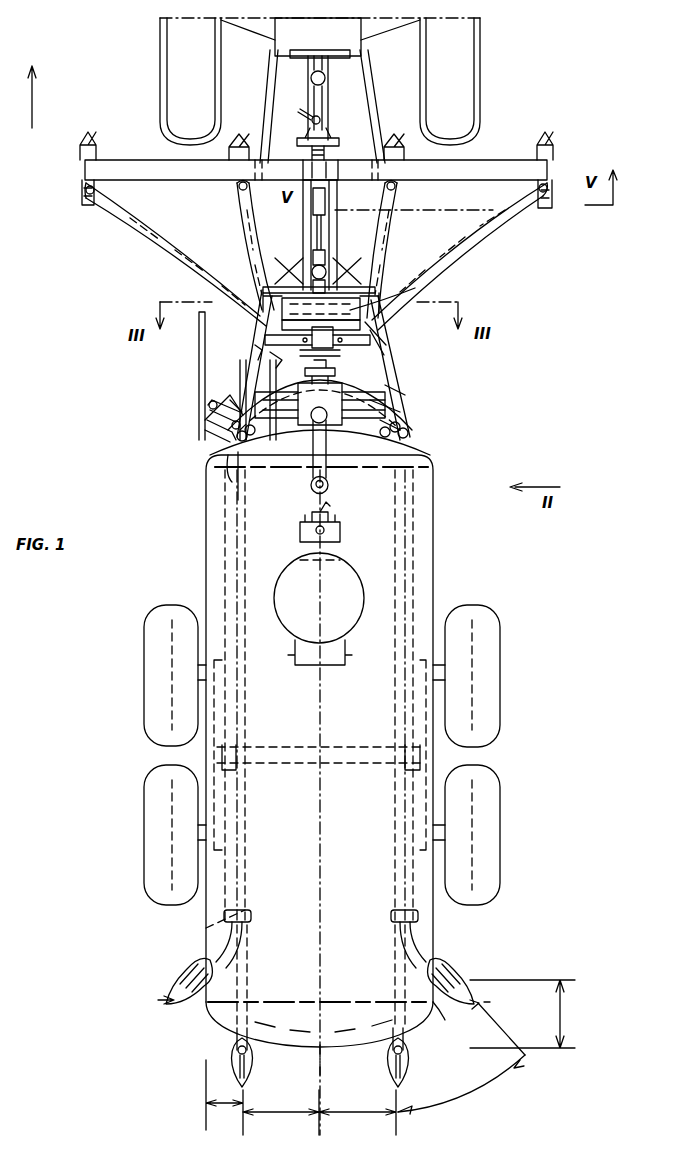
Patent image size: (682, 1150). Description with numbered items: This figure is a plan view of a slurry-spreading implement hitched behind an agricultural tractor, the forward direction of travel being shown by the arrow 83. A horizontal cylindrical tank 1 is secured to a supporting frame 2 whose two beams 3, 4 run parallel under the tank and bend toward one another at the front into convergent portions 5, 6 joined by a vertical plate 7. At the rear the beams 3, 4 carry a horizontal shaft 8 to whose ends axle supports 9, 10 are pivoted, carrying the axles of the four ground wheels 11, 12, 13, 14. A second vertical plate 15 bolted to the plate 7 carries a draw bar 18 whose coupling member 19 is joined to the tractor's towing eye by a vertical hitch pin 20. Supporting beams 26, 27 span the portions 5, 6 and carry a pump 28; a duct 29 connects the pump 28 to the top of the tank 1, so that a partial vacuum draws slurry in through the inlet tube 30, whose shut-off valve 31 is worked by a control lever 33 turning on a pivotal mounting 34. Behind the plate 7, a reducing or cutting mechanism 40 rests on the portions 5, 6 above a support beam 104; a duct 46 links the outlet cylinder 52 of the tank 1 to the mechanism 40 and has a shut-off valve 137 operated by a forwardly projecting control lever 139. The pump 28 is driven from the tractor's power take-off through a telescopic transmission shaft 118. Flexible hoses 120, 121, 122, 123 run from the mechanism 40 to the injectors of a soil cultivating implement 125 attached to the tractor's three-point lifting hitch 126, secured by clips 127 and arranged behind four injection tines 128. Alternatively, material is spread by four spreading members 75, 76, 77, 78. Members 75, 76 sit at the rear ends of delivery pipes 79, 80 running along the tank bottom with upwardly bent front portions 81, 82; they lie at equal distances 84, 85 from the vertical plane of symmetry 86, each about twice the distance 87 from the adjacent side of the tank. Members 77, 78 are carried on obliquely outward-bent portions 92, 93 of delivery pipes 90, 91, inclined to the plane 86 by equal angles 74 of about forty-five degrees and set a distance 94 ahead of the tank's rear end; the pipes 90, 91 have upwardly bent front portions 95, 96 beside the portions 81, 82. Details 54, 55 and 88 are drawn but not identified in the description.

The cylindrical tank 1 is at (206, 545).
The supporting frame 2 is at (427, 437).
The beam 3 is at (224, 510).
The beam 4 is at (434, 494).
The forwardly convergent portion 5 is at (252, 348).
The forwardly convergent portion 6 is at (400, 400).
The vertical plate 7 is at (405, 300).
The shaft 8 is at (310, 760).
The axle support 9 is at (206, 752).
The axle support 10 is at (434, 757).
The ground wheel 11 is at (146, 825).
The ground wheel 12 is at (146, 710).
The ground wheel 13 is at (500, 818).
The ground wheel 14 is at (500, 634).
The second vertical plate 15 is at (356, 285).
The draw bar 18 is at (303, 233).
The coupling member 19 is at (337, 140).
The hitch pin 20 is at (300, 115).
The supporting beam 26 is at (410, 417).
The supporting beam 27 is at (395, 385).
The pump 28 is at (344, 405).
The duct 29 is at (328, 482).
The inlet tube 30 is at (206, 405).
The shut-off valve 31 is at (204, 435).
The control lever 33 is at (199, 357).
The pivotal mounting 34 is at (240, 498).
The reducing or cutting mechanism 40 is at (336, 350).
The duct 46 is at (305, 372).
The outlet cylinder 52 is at (360, 572).
The bracket 54 is at (352, 653).
The fitting 55 is at (342, 527).
The angle 74 is at (458, 1098).
The spreading member 75 is at (256, 1086).
The spreading member 76 is at (390, 1078).
The spreading member 77 is at (151, 1001).
The spreading member 78 is at (487, 1003).
The delivery pipe 79 is at (250, 980).
The delivery pipe 80 is at (393, 980).
The upwardly bent-over portion 81 is at (240, 470).
The upwardly bent-over portion 82 is at (345, 448).
The arrow 83 is at (36, 96).
The distance 84 is at (272, 1112).
The distance 85 is at (358, 1110).
The vertical plane of symmetry 86 is at (324, 1062).
The distance 87 is at (226, 1106).
The hull corner 88 is at (446, 1018).
The delivery pipe 90 is at (210, 916).
The delivery pipe 91 is at (425, 914).
The obliquely bent portion 92 is at (206, 960).
The obliquely bent portion 93 is at (436, 962).
The distance 94 is at (565, 1018).
The upwardly bent-over portion 95 is at (265, 377).
The upwardly bent-over portion 96 is at (412, 440).
The support beam 104 is at (390, 346).
The telescopic transmission shaft 118 is at (330, 205).
The hose 120 is at (390, 233).
The hose 121 is at (472, 237).
The hose 122 is at (250, 225).
The hose 123 is at (168, 245).
The soil cultivating implement 125 is at (472, 166).
The three-point lifting device 126 is at (310, 94).
The clip 127 is at (554, 198).
The injection tine 128 is at (98, 140).
The shut-off valve 137 is at (320, 404).
The control lever 139 is at (268, 362).